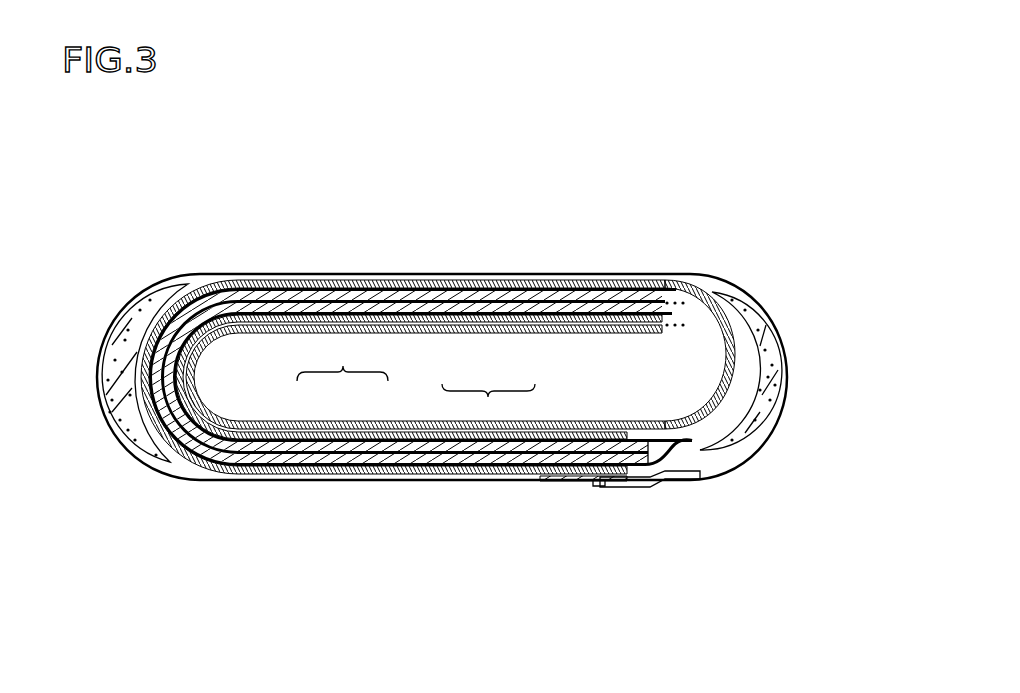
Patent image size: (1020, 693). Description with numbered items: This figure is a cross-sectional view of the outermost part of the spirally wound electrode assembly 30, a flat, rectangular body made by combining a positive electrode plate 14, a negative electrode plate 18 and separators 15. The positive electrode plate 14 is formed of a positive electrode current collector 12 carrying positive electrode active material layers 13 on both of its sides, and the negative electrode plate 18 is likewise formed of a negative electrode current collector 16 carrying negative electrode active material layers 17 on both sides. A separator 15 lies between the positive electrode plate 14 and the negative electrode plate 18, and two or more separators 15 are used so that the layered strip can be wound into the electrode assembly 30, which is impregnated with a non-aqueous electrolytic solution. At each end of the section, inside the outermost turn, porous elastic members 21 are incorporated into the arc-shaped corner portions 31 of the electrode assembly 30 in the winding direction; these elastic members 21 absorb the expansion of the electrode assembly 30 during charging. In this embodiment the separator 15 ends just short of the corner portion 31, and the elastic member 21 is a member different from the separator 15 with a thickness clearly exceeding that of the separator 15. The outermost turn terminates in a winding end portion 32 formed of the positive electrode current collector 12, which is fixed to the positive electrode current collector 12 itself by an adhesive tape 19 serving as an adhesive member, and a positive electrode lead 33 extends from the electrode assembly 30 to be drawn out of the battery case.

The positive electrode current collector 12 is at (450, 328).
The positive electrode active material layers 13 is at (552, 280).
The positive electrode plate 14 is at (488, 404).
The separator 15 is at (680, 442).
The negative electrode current collector 16 is at (370, 420).
The negative electrode active material layers 17 is at (317, 440).
The negative electrode plate 18 is at (342, 358).
The adhesive tape 19 is at (636, 487).
The porous elastic member 21 is at (112, 428).
The electrode assembly 30 is at (647, 167).
The corner portions 31 is at (105, 327).
The winding end portion 32 is at (600, 488).
The positive electrode lead 33 is at (557, 482).